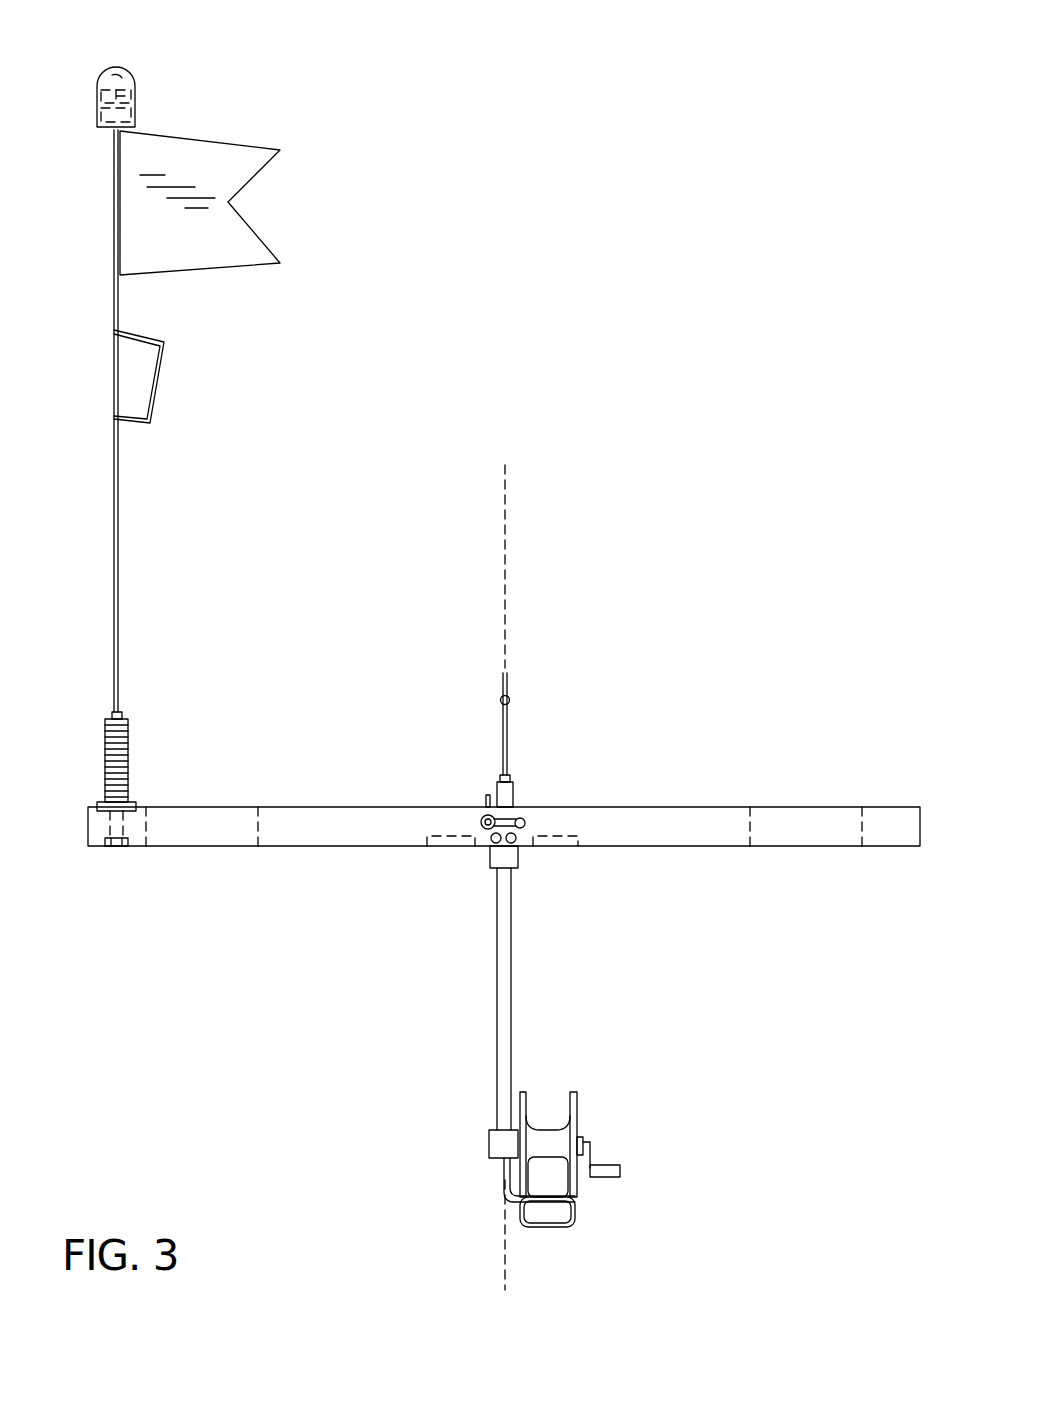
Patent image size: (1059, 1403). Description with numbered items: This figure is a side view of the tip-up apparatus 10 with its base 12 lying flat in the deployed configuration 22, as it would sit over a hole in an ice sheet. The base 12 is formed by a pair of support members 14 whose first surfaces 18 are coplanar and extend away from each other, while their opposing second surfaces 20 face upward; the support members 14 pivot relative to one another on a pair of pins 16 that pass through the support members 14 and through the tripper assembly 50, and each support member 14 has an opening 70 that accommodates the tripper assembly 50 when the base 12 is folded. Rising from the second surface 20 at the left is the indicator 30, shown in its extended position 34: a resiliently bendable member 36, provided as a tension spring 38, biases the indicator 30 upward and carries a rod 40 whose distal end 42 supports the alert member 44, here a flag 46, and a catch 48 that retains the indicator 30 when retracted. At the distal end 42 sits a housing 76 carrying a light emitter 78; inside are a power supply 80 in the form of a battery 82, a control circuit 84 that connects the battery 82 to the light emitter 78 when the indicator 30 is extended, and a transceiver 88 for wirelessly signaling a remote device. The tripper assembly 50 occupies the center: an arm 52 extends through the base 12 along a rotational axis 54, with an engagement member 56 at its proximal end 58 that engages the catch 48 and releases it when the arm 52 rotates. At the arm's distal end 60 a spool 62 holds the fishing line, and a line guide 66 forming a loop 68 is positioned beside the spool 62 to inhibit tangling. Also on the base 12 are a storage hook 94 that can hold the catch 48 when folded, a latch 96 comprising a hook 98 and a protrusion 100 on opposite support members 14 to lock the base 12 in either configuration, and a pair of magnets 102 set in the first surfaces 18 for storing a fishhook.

The tip-up apparatus 10 is at (635, 265).
The base 12 is at (688, 767).
The support members 14 is at (283, 832).
The pins 16 is at (488, 852).
The first surface 18 is at (332, 850).
The second surface 20 is at (313, 808).
The deployed configuration 22 is at (562, 720).
The indicator 30 is at (82, 480).
The extended position 34 is at (80, 522).
The resiliently bendable member 36 is at (88, 768).
The tension spring 38 is at (118, 762).
The rod 40 is at (120, 580).
The distal end 42 is at (113, 135).
The alert member 44 is at (320, 158).
The flag 46 is at (232, 250).
The catch 48 is at (165, 377).
The tripper assembly 50 is at (472, 1040).
The arm 52 is at (505, 1018).
The rotational axis 54 is at (503, 1263).
The engagement member 56 is at (509, 699).
The proximal end 58 is at (513, 792).
The distal end 60 is at (498, 1143).
The spool 62 is at (550, 1140).
The line guide 66 is at (556, 1240).
The loop 68 is at (575, 1222).
The opening 70 is at (190, 830).
The housing 76 is at (138, 105).
The light emitter 78 is at (116, 75).
The power supply 80 is at (88, 115).
The battery 82 is at (138, 118).
The control circuit 84 is at (98, 97).
The transceiver 88 is at (135, 92).
The storage hook 94 is at (489, 795).
The latch 96 is at (545, 822).
The hook 98 is at (481, 822).
The protrusion 100 is at (487, 850).
The magnets 102 is at (448, 848).